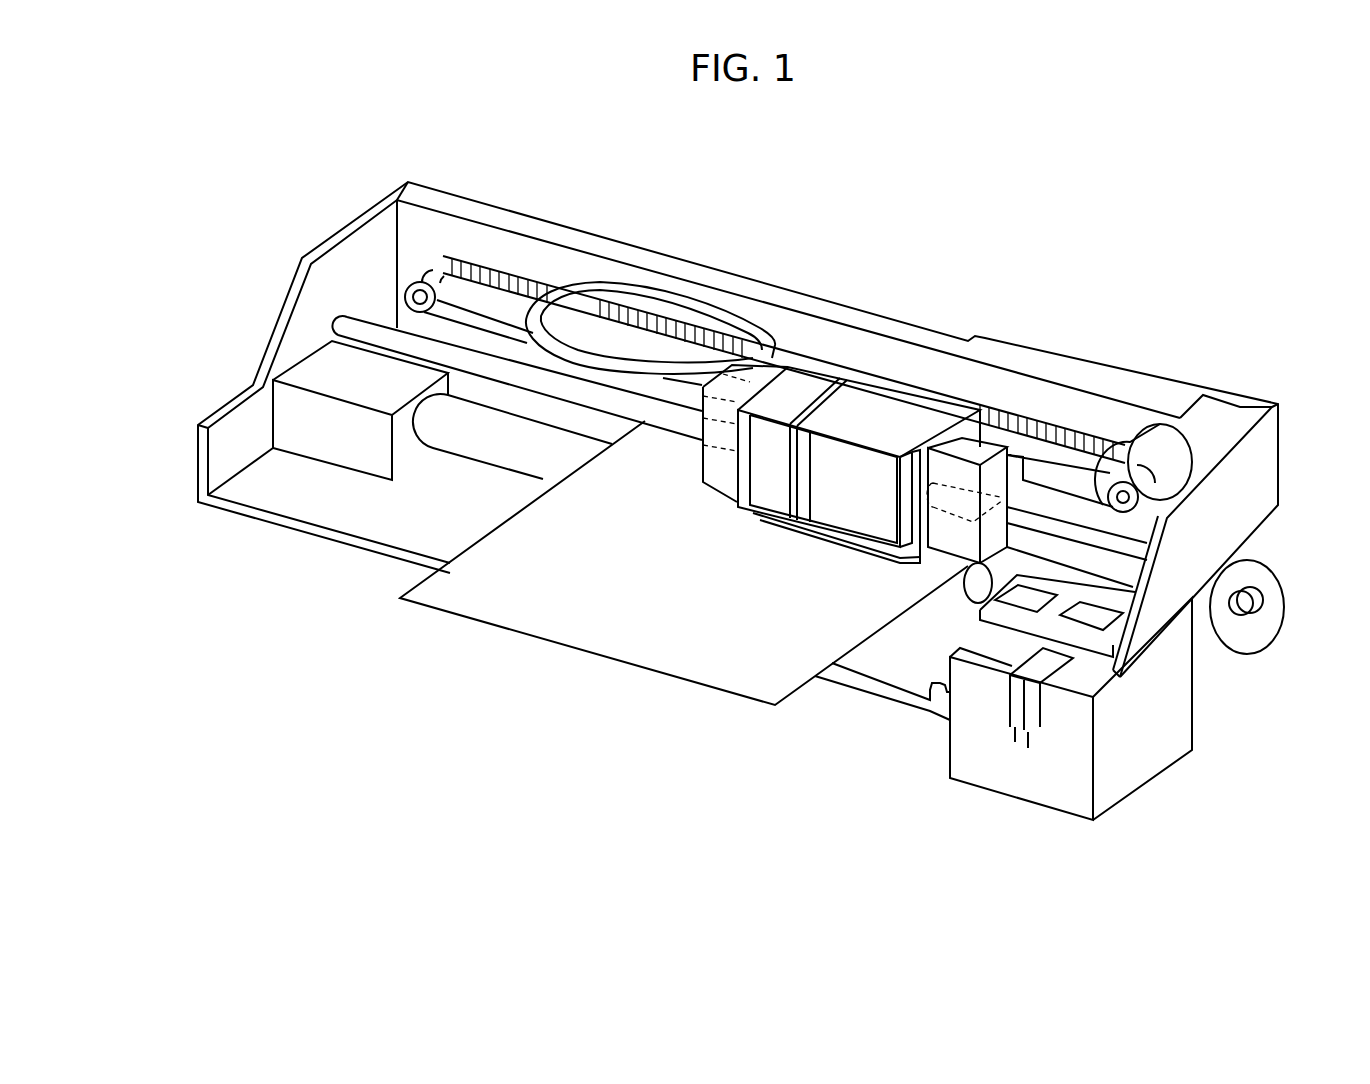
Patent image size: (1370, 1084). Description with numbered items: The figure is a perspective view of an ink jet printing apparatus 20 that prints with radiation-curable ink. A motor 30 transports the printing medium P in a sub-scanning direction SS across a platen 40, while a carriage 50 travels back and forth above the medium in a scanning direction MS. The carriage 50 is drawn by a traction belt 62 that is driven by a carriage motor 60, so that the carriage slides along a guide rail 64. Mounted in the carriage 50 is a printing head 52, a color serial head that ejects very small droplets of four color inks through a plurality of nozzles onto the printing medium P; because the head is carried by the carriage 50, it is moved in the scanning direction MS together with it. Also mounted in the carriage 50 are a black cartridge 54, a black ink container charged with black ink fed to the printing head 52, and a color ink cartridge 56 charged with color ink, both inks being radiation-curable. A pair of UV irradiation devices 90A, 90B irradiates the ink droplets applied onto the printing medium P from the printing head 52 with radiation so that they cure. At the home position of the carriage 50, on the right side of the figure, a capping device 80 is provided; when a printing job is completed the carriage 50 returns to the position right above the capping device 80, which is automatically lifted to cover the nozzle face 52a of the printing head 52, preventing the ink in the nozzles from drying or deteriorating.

The ink jet printing apparatus 20 is at (1040, 241).
The motor 30 is at (1253, 607).
The platen 40 is at (480, 447).
The carriage 50 is at (800, 530).
The printing head 52 is at (885, 555).
The nozzle face 52a is at (860, 555).
The black cartridge 54 is at (825, 382).
The color ink cartridge 56 is at (897, 412).
The carriage motor 60 is at (1162, 447).
The traction belt 62 is at (468, 287).
The guide rail 64 is at (373, 332).
The capping device 80 is at (1068, 600).
The UV irradiation device 90A is at (688, 453).
The UV irradiation device 90B is at (960, 547).
The printing medium P is at (737, 657).
The scanning direction MS is at (757, 533).
The sub-scanning direction SS is at (603, 670).